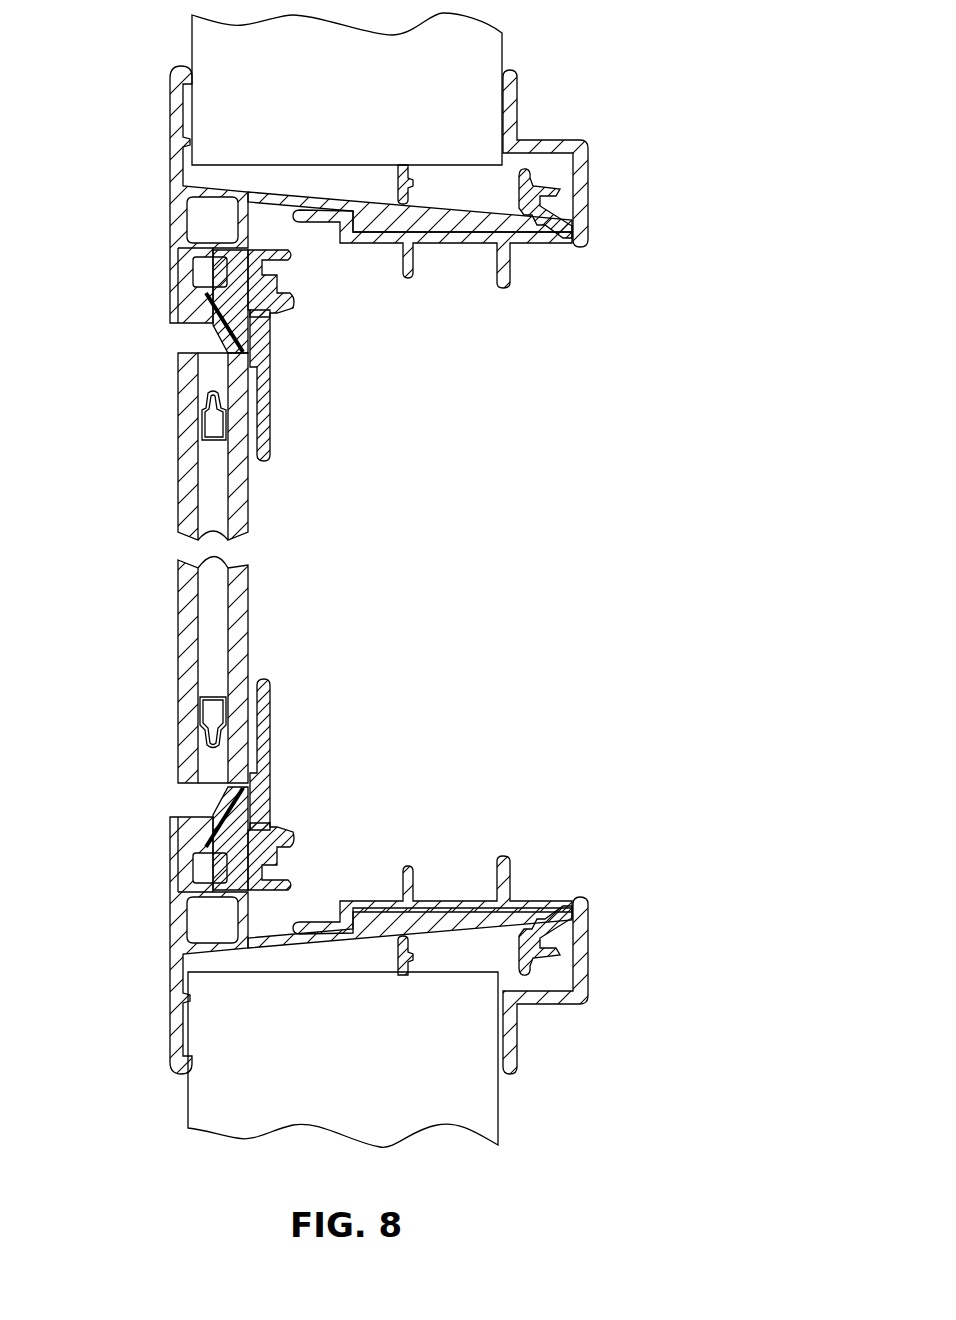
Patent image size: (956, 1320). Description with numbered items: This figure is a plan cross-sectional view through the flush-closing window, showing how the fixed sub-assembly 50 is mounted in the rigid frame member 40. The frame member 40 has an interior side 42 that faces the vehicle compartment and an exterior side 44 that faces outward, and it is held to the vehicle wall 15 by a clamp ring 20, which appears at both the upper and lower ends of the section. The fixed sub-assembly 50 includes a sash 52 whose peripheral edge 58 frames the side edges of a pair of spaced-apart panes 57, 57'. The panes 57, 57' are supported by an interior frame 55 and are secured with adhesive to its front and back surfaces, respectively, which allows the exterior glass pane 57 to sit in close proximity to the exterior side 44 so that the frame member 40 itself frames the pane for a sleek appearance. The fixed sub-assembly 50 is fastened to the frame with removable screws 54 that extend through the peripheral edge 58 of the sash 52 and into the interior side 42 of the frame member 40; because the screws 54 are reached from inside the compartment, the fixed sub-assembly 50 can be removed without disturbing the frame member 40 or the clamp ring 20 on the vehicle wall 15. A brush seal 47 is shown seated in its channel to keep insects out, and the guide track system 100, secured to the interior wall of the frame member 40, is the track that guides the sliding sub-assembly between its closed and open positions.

The vehicle wall 15 is at (503, 50).
The clamp ring 20 is at (588, 198).
The frame member 40 is at (248, 225).
The interior side 42 is at (572, 867).
The exterior side 44 is at (170, 150).
The brush seal 47 is at (205, 350).
The fixed sub-assembly 50 is at (214, 670).
The sash 52 is at (268, 753).
The screws 54 is at (293, 303).
The interior frame 55 is at (208, 757).
The exterior glass pane 57 is at (155, 446).
The pane 57' is at (276, 670).
The peripheral edge 58 is at (270, 398).
The guide track system 100 is at (453, 243).